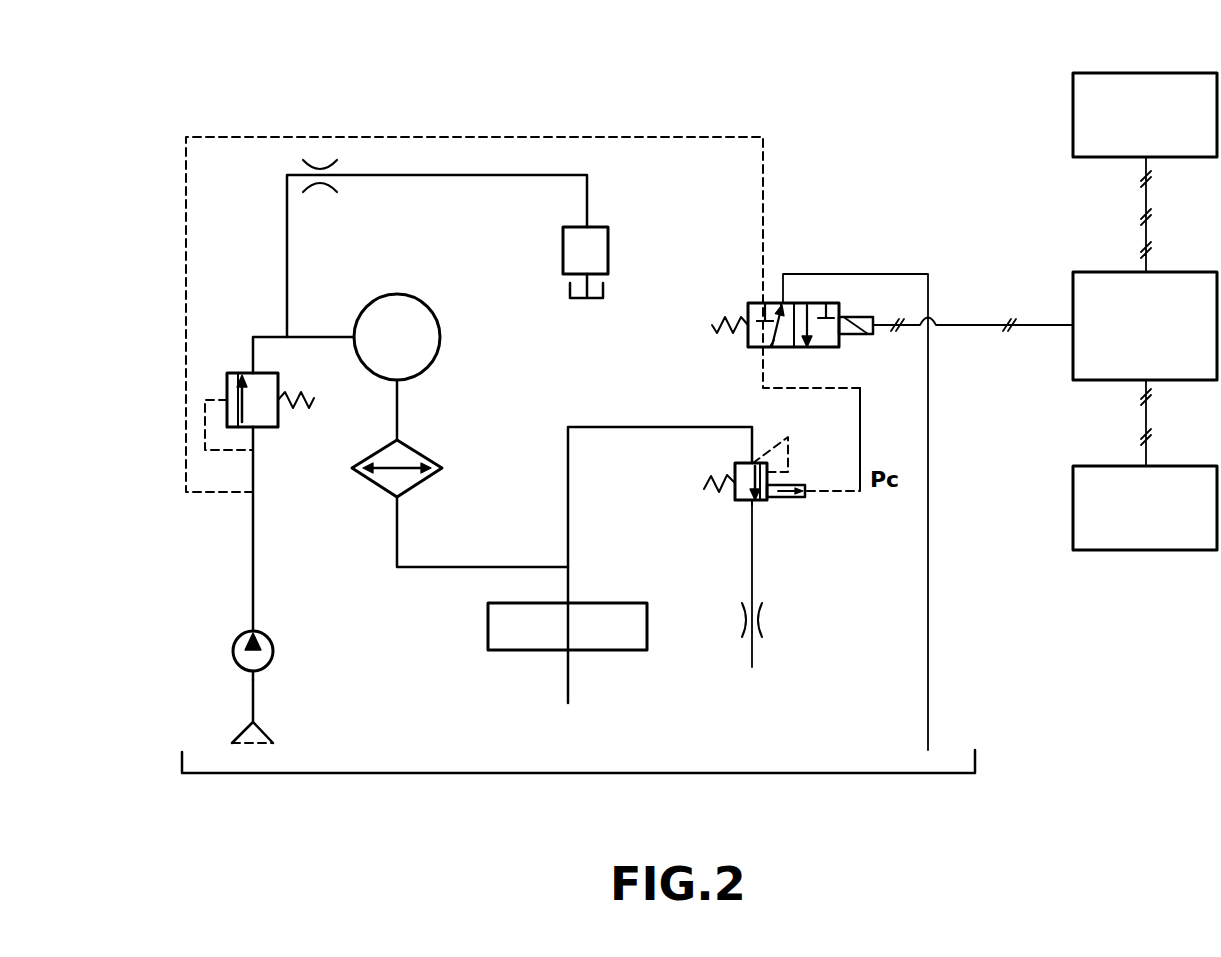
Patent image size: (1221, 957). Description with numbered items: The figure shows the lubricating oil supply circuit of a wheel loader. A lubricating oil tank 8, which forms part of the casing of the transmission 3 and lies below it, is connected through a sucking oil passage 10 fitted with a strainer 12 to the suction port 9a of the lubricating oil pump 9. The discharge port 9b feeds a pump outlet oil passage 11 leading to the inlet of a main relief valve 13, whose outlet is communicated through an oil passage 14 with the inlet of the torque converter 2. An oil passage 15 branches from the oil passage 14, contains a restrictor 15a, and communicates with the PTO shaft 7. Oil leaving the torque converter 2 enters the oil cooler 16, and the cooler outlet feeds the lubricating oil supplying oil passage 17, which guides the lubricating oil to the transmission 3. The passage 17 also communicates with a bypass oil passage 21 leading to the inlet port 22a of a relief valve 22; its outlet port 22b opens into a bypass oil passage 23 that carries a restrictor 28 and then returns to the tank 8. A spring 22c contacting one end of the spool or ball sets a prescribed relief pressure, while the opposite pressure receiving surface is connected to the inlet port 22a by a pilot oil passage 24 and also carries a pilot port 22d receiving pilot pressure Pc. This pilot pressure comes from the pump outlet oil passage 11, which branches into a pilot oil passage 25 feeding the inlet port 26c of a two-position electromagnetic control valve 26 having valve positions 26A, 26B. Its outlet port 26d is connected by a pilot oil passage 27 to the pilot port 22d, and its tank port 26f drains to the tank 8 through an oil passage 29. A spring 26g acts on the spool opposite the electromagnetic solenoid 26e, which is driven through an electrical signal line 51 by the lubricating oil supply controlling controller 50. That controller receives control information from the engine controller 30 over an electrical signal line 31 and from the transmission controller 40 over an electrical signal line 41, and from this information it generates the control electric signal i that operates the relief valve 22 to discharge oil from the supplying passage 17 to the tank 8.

The torque converter 2 is at (425, 303).
The transmission 3 is at (512, 652).
The PTO shaft 7 is at (595, 227).
The lubricating oil tank 8 is at (570, 290).
The lubricating oil pump 9 is at (233, 651).
The suction port 9a is at (253, 672).
The discharge port 9b is at (253, 632).
The sucking oil passage 10 is at (253, 700).
The pump outlet oil passage 11 is at (253, 524).
The strainer 12 is at (240, 735).
The main relief valve 13 is at (250, 372).
The oil passage 14 is at (322, 336).
The oil passage 15 is at (515, 175).
The restrictor 15a is at (320, 190).
The oil cooler 16 is at (372, 454).
The lubricating oil supplying oil passage 17 is at (397, 520).
The bypass oil passage 21 is at (628, 427).
The relief valve 22 is at (735, 478).
The inlet port 22a is at (752, 462).
The outlet port 22b is at (752, 505).
The spring 22c is at (708, 490).
The pilot port 22d is at (790, 497).
The bypass oil passage 23 is at (753, 585).
The pilot oil passage 24 is at (790, 445).
The pilot oil passage 25 is at (186, 350).
The electromagnetic control valve 26 is at (832, 303).
The valve position 26A is at (755, 297).
The valve position 26B is at (819, 294).
The inlet port 26c is at (765, 303).
The outlet port 26d is at (768, 348).
The electromagnetic solenoid 26e is at (862, 317).
The tank port 26f is at (781, 303).
The spring 26g is at (712, 325).
The pilot oil passage 27 is at (845, 388).
The restrictor 28 is at (766, 620).
The oil passage 29 is at (890, 274).
The engine controller 30 is at (1104, 73).
The electrical signal line 31 is at (1150, 195).
The transmission controller 40 is at (1104, 466).
The electrical signal line 41 is at (1150, 420).
The lubricating oil supply controlling controller 50 is at (1104, 272).
The electrical signal line 51 is at (963, 326).